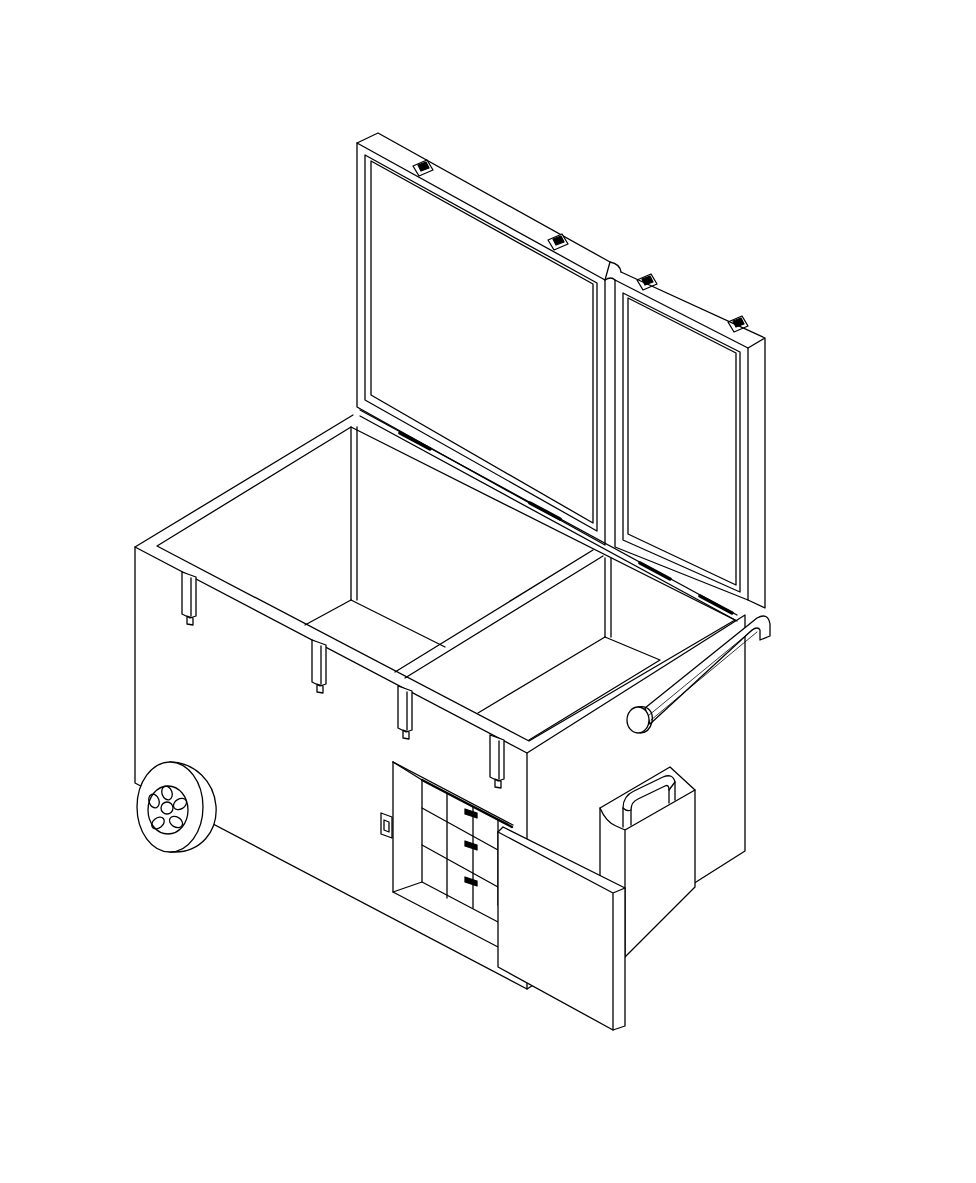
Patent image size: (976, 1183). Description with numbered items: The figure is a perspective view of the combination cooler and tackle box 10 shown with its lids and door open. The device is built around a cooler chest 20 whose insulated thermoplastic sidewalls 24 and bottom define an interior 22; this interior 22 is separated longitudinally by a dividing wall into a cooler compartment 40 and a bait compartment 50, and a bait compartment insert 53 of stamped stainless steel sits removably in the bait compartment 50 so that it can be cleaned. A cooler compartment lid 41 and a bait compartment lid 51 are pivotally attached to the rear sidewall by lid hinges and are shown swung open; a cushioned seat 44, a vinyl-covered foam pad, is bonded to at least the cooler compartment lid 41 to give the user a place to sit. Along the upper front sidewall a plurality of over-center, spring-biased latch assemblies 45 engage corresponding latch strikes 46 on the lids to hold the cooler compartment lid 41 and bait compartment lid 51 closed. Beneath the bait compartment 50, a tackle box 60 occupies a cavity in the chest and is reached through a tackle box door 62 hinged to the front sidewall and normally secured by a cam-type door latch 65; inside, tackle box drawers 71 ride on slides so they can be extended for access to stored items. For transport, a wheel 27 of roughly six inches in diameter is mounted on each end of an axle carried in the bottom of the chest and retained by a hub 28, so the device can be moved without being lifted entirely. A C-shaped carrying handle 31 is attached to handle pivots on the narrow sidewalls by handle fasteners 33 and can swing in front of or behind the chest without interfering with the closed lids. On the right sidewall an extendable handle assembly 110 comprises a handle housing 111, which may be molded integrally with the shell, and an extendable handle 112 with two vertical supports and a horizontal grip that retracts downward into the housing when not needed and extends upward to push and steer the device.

The combination cooler and tackle box 10 is at (120, 125).
The cooler chest 20 is at (136, 654).
The interior 22 is at (325, 525).
The sidewalls 24 is at (150, 710).
The wheel 27 is at (182, 848).
The hub 28 is at (165, 812).
The carrying handle 31 is at (712, 643).
The handle fasteners 33 is at (649, 724).
The cooler compartment 40 is at (208, 516).
The cooler compartment lid 41 is at (360, 300).
The cushioned seat 44 is at (613, 256).
The latch assemblies 45 is at (185, 593).
The latch strikes 46 is at (430, 170).
The bait compartment 50 is at (728, 660).
The bait compartment lid 51 is at (752, 478).
The bait compartment insert 53 is at (685, 605).
The tackle box 60 is at (412, 946).
The tackle box door 62 is at (574, 988).
The door latch 65 is at (383, 833).
The tackle box drawers 71 is at (463, 895).
The extendable handle assembly 110 is at (688, 903).
The handle housing 111 is at (660, 935).
The extendable handle 112 is at (672, 795).